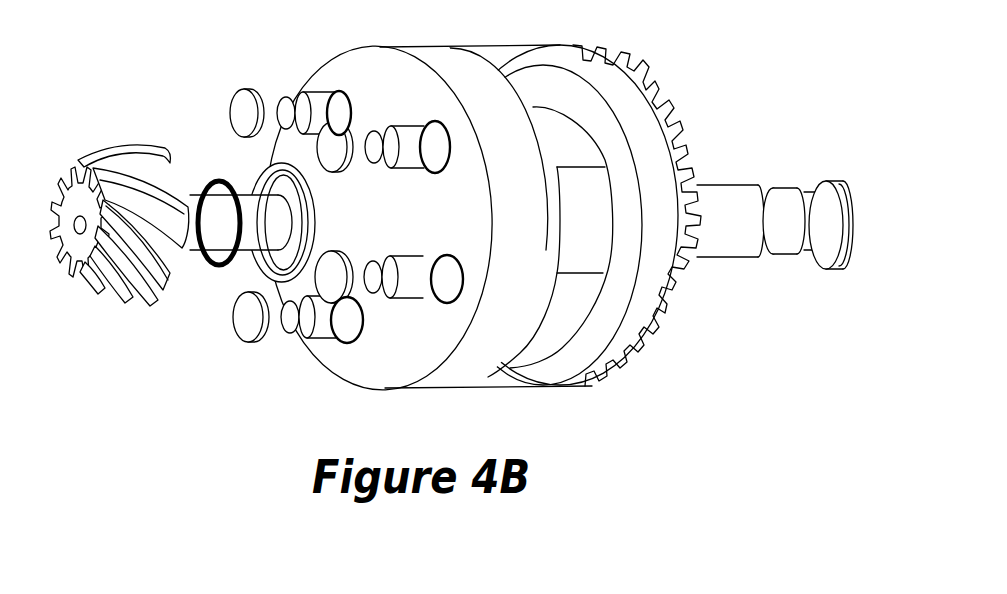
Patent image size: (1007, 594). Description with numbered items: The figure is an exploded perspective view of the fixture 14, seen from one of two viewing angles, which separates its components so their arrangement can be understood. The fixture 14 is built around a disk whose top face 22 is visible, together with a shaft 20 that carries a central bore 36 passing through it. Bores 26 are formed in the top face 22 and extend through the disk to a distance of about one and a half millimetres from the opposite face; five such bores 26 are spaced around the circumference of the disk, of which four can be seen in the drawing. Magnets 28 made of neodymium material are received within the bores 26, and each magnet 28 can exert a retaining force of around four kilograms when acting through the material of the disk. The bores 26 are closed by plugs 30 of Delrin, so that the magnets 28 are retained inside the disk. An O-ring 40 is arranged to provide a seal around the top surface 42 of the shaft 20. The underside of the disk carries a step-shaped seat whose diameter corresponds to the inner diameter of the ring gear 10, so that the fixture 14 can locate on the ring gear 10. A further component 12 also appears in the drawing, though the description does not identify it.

The ring gear 10 is at (640, 364).
The pinion gear 12 is at (82, 288).
The fixture 14 is at (451, 223).
The shaft 20 is at (723, 258).
The top face 22 is at (374, 357).
The bores 26 is at (448, 289).
The magnets 28 is at (290, 181).
The plugs 30 is at (246, 110).
The central bore 36 is at (221, 273).
The O-ring 40 is at (217, 183).
The top surface 42 is at (287, 278).